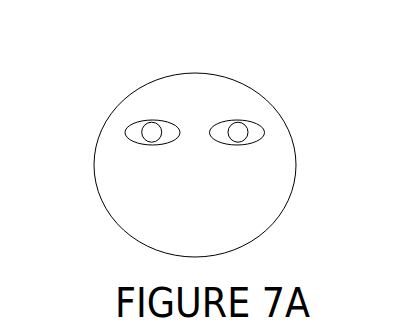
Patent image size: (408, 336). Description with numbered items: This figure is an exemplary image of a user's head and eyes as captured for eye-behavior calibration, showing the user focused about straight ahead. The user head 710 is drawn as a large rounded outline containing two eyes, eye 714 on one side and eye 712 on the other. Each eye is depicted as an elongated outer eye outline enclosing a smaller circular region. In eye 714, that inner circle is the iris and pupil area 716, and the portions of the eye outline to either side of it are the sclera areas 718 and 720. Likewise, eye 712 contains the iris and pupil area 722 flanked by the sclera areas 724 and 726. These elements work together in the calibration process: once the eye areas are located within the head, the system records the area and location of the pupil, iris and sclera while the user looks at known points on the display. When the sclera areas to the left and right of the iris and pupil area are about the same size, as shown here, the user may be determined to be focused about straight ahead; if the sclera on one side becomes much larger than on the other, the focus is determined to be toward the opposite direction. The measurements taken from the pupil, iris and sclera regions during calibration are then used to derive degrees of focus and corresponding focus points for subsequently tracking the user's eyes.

The user head 710 is at (288, 198).
The eye 712 is at (262, 138).
The eye 714 is at (130, 137).
The iris and pupil area 716 is at (148, 130).
The sclera area 718 is at (127, 132).
The sclera area 720 is at (168, 125).
The iris and pupil area 722 is at (237, 127).
The sclera area 724 is at (222, 125).
The sclera area 726 is at (258, 132).